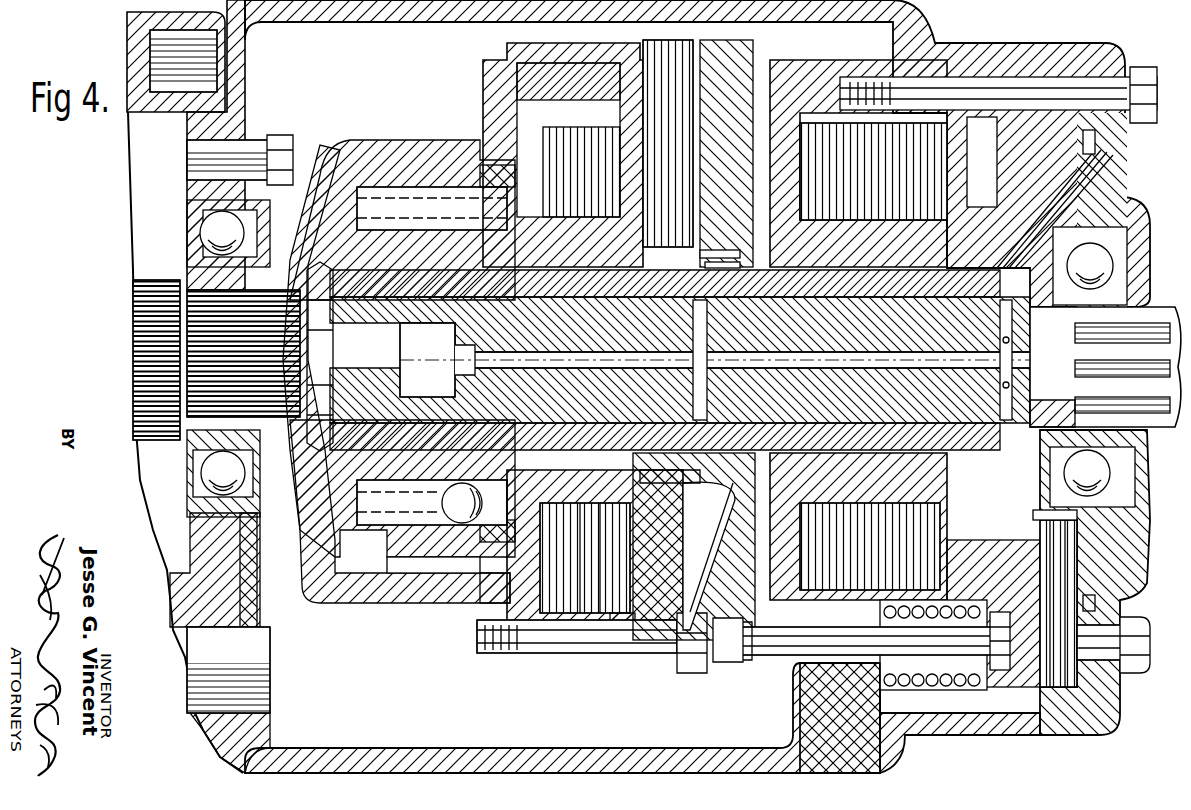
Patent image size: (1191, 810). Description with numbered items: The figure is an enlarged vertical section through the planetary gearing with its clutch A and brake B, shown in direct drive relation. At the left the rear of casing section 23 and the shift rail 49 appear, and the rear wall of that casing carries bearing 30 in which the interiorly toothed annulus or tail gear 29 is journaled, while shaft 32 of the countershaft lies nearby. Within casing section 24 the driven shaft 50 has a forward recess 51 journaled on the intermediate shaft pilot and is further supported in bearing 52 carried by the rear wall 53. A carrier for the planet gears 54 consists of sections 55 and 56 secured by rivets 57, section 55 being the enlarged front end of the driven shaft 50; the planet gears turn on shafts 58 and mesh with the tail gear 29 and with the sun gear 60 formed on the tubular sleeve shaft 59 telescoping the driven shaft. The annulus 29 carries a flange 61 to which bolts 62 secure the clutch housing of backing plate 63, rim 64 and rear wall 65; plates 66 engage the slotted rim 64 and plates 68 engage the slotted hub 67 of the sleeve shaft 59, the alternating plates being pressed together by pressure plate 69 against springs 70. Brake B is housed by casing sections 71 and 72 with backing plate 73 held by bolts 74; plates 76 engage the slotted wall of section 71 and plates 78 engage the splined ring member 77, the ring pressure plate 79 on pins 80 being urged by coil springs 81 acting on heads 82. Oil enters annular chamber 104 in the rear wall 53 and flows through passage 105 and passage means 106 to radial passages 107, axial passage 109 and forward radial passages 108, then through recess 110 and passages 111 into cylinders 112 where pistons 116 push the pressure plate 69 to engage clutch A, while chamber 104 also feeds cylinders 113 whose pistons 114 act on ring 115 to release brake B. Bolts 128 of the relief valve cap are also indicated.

The casing section 23 is at (127, 20).
The shift rail 49 is at (135, 62).
The casing section 24 is at (540, 763).
The toothed annulus 29 is at (356, 595).
The bearing 30 is at (205, 482).
The countershaft shaft 32 is at (193, 690).
The driven shaft 50 is at (1158, 320).
The recess 51 is at (356, 410).
The bearing 52 is at (1133, 252).
The rear wall 53 is at (1112, 176).
The planet gears 54 is at (400, 172).
The carrier section 55 is at (350, 547).
The carrier section 56 is at (485, 168).
The rivets 57 is at (470, 512).
The planet gear shafts 58 is at (450, 195).
The tubular sleeve shaft 59 is at (861, 295).
The sun gear 60 is at (440, 345).
The radial flange 61 is at (490, 60).
The bolts 62 is at (498, 655).
The backing plate 63 is at (478, 605).
The rim 64 is at (620, 668).
The rear wall 65 is at (660, 672).
The clutch plates 66 is at (598, 635).
The slotted hub 67 is at (545, 472).
The clutch plates 68 is at (565, 635).
The pressure plate 69 is at (628, 567).
The springs 70 is at (520, 82).
The casing section 71 is at (865, 740).
The casing section 72 is at (990, 735).
The backing plate 73 is at (960, 200).
The bolts 74 is at (1150, 660).
The brake plates 76 is at (800, 128).
The ring member 77 is at (770, 490).
The brake plates 78 is at (785, 555).
The ring pressure plate 79 is at (724, 665).
The pins 80 is at (773, 658).
The coil springs 81 is at (930, 686).
The pin heads 82 is at (1000, 670).
The annular chamber 104 is at (1095, 146).
The passage 105 is at (1057, 205).
The passage means 106 is at (1008, 316).
The radial passages 107 is at (1010, 347).
The forward radial passages 108 is at (692, 333).
The axial passage 109 is at (758, 360).
The annular recess 110 is at (708, 265).
The passages 111 is at (705, 248).
The cylinders 112 is at (723, 112).
The cylinders 113 is at (1077, 530).
The pistons 114 is at (1050, 556).
The ring 115 is at (998, 590).
The pistons 116 is at (672, 112).
The bolts 128 is at (138, 413).
The clutch A is at (480, 640).
The brake B is at (754, 662).